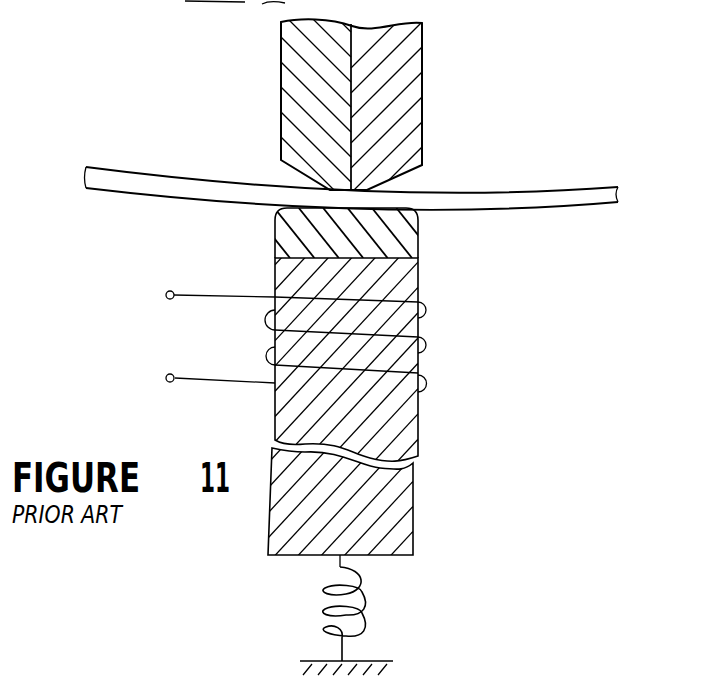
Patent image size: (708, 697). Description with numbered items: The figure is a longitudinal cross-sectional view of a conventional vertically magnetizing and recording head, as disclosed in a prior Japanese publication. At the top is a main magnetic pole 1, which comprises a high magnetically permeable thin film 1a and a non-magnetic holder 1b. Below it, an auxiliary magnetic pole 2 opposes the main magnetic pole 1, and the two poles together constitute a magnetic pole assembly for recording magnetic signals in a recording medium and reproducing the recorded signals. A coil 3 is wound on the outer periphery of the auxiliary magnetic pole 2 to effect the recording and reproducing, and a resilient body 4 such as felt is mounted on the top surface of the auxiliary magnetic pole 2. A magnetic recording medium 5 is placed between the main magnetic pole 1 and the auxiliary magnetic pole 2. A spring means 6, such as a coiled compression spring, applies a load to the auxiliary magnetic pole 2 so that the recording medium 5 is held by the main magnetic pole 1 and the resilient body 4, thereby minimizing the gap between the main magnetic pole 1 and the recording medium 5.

The main magnetic pole 1 is at (403, 82).
The high magnetically permeable thin film 1a is at (356, 36).
The non-magnetic holder 1b is at (405, 123).
The auxiliary magnetic pole 2 is at (382, 423).
The coil 3 is at (426, 345).
The resilient body 4 is at (398, 238).
The magnetic recording medium 5 is at (530, 197).
The spring means 6 is at (362, 608).